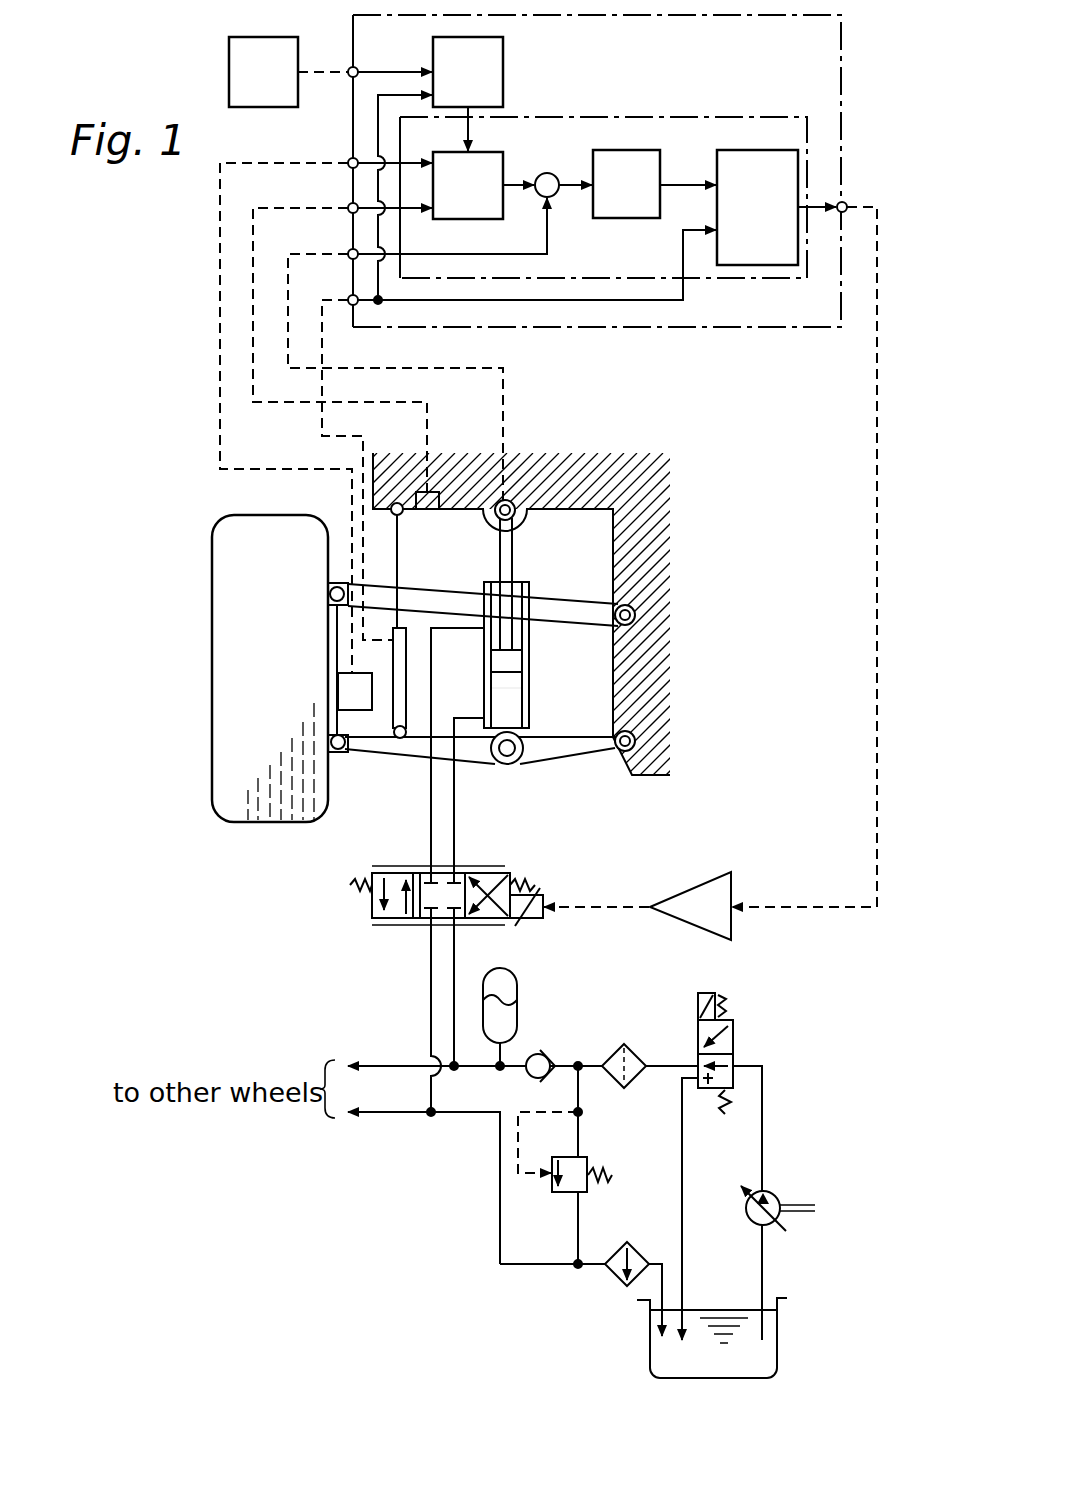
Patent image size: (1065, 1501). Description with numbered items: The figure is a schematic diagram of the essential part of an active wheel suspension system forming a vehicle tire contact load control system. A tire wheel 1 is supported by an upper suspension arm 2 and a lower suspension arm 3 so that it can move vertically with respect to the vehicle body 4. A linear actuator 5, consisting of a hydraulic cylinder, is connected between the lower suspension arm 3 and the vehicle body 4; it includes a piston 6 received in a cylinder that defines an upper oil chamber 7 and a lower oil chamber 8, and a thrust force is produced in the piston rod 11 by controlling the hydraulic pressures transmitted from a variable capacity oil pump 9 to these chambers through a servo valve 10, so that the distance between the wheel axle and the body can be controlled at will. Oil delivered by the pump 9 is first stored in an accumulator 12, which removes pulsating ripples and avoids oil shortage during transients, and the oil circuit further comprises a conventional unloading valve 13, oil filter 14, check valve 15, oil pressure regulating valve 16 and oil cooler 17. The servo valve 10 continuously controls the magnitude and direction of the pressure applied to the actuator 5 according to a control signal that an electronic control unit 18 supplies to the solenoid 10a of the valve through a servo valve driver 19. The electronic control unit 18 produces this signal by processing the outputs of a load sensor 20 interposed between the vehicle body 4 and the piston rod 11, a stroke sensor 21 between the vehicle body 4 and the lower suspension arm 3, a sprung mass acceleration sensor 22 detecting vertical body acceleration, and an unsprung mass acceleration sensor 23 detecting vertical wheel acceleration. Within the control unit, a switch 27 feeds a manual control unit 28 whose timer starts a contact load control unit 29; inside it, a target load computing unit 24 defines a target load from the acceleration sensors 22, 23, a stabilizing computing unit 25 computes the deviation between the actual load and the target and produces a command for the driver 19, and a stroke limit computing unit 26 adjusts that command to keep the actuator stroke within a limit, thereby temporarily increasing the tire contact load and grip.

The tire wheel 1 is at (272, 823).
The upper suspension arm 2 is at (585, 598).
The lower suspension arm 3 is at (565, 752).
The vehicle body 4 is at (655, 508).
The linear actuator 5 is at (532, 700).
The piston 6 is at (525, 665).
The upper oil chamber 7 is at (522, 580).
The lower oil chamber 8 is at (498, 688).
The variable capacity oil pump 9 is at (772, 1190).
The servo valve 10 is at (485, 866).
The solenoid 10a is at (540, 915).
The piston rod 11 is at (498, 552).
The accumulator 12 is at (517, 1000).
The unloading valve 13 is at (735, 1040).
The oil filter 14 is at (636, 1052).
The check valve 15 is at (548, 1058).
The oil pressure regulating valve 16 is at (590, 1158).
The oil cooler 17 is at (630, 1243).
The electronic control unit 18 is at (713, 327).
The servo valve driver 19 is at (693, 895).
The load sensor 20 is at (512, 498).
The stroke sensor 21 is at (392, 723).
The sprung mass acceleration sensor 22 is at (428, 492).
The unsprung mass acceleration sensor 23 is at (357, 712).
The target load computing unit 24 is at (468, 185).
The stabilizing computing unit 25 is at (626, 184).
The stroke limit computing unit 26 is at (757, 207).
The switch 27 is at (263, 72).
The manual control unit 28 is at (468, 72).
The contact load control unit 29 is at (670, 117).